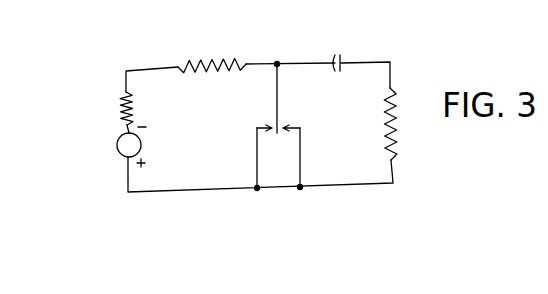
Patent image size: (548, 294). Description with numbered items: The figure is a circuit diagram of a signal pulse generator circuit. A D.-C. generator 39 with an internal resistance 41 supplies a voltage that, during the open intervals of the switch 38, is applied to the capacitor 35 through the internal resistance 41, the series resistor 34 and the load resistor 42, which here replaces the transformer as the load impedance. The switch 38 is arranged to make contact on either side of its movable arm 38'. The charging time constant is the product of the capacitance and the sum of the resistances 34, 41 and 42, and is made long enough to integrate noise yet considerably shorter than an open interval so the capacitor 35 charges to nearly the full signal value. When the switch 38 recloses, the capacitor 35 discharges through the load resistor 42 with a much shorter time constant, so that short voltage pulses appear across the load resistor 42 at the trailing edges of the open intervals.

The series resistor 34 is at (222, 62).
The capacitor 35 is at (342, 40).
The switch 38 is at (287, 142).
The movable arm 38' is at (248, 101).
The D.-C. generator 39 is at (118, 142).
The internal resistance 41 is at (123, 106).
The load resistor 42 is at (396, 94).